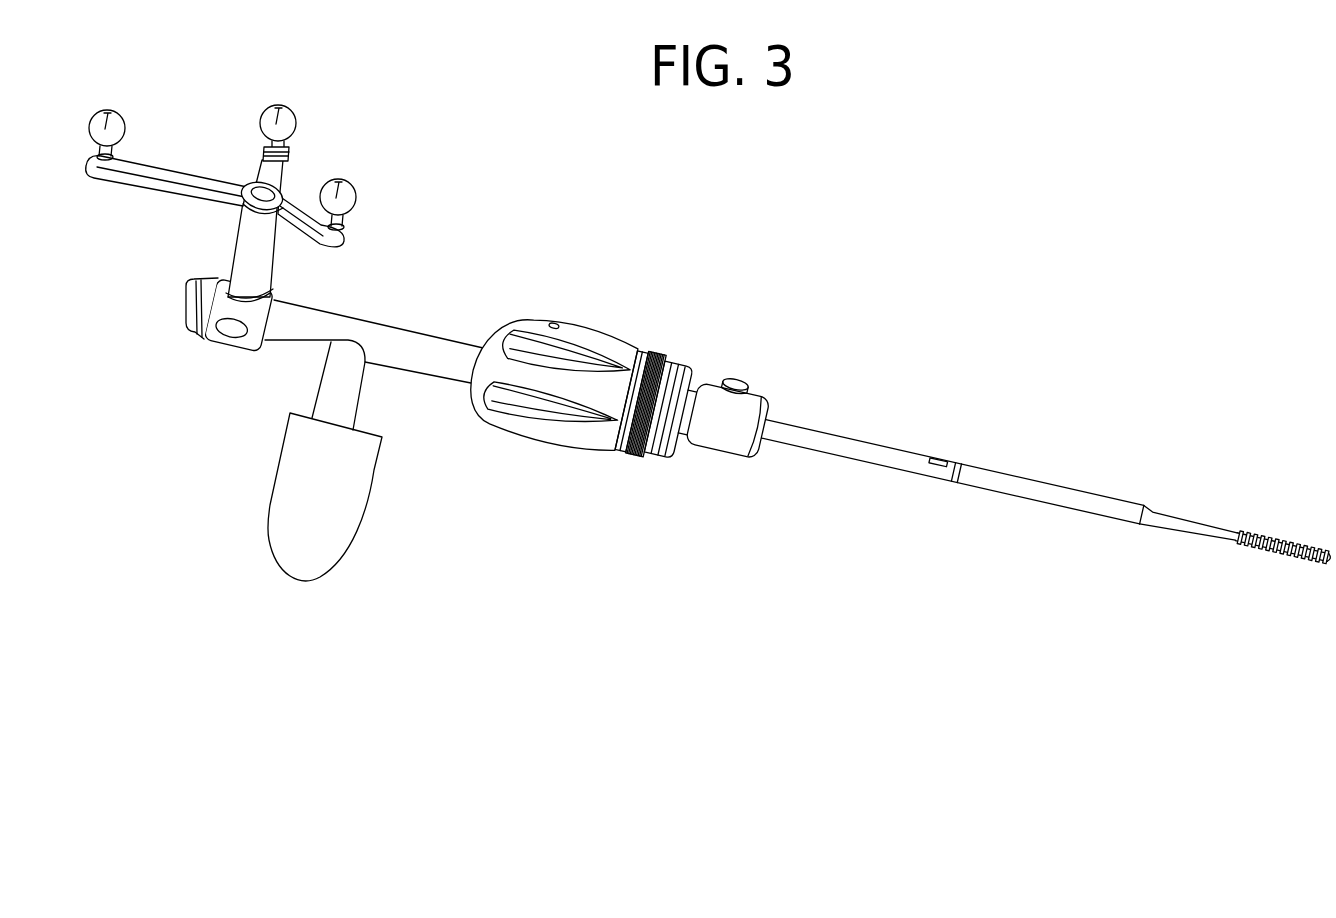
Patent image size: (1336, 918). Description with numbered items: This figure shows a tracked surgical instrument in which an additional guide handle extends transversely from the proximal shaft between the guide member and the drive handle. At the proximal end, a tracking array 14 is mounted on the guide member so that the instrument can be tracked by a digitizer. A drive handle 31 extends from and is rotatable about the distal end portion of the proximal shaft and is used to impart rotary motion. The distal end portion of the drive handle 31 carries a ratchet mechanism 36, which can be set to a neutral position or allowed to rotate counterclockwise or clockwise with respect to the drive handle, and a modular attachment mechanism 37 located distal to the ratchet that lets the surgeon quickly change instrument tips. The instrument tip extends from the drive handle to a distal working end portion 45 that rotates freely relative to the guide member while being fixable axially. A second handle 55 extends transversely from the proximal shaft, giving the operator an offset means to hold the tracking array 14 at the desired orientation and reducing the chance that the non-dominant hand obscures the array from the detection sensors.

The tracking array 14 is at (242, 176).
The drive handle 31 is at (560, 313).
The ratchet mechanism 36 is at (668, 348).
The modular attachment mechanism 37 is at (763, 447).
The distal working end portion 45 is at (1288, 561).
The second handle 55 is at (317, 543).